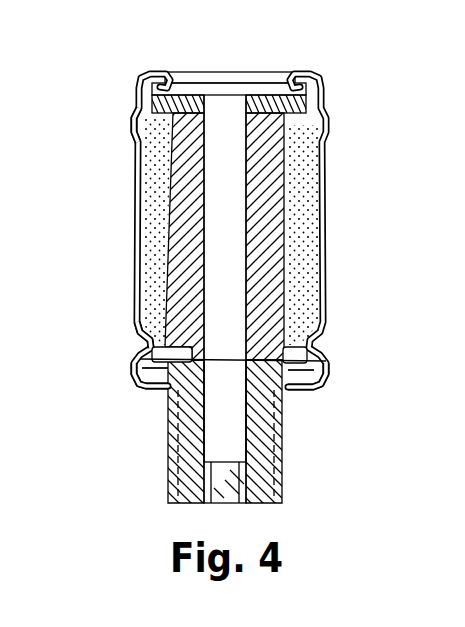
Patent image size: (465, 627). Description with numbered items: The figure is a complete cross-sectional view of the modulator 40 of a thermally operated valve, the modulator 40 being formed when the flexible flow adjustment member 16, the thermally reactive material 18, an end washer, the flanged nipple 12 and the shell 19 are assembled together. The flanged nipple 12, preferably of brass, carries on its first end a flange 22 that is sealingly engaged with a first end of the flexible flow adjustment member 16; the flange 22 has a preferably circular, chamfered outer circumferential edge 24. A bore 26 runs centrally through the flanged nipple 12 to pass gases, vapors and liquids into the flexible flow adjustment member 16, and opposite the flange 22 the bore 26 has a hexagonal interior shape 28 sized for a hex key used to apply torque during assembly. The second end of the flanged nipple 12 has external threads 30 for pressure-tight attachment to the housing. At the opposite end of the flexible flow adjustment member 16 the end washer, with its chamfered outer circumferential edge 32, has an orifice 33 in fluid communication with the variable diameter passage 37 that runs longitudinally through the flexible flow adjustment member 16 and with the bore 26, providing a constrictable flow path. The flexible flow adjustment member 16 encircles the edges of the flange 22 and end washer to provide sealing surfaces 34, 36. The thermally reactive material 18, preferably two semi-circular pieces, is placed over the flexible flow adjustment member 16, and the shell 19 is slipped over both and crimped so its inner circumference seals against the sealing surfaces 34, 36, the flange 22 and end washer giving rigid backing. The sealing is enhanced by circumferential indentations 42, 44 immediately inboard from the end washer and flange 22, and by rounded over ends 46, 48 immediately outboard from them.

The flanged nipple 12 is at (263, 450).
The flexible flow adjustment member 16 is at (273, 259).
The thermally reactive material 18 is at (300, 208).
The shell 19 is at (323, 178).
The flange 22 is at (140, 375).
The outer circumferential edge 24 is at (325, 361).
The bore 26 is at (213, 427).
The hexagonal interior shape 28 is at (263, 506).
The external threads 30 is at (173, 477).
The outer circumferential edge 32 is at (307, 118).
The orifice 33 is at (205, 107).
The sealing surface 34 is at (140, 359).
The sealing surface 36 is at (322, 100).
The variable diameter passage 37 is at (220, 198).
The modulator 40 is at (128, 79).
The circumferential indentation 42 is at (143, 128).
The circumferential indentation 44 is at (135, 326).
The rounded over end 46 is at (307, 87).
The rounded over end 48 is at (305, 380).